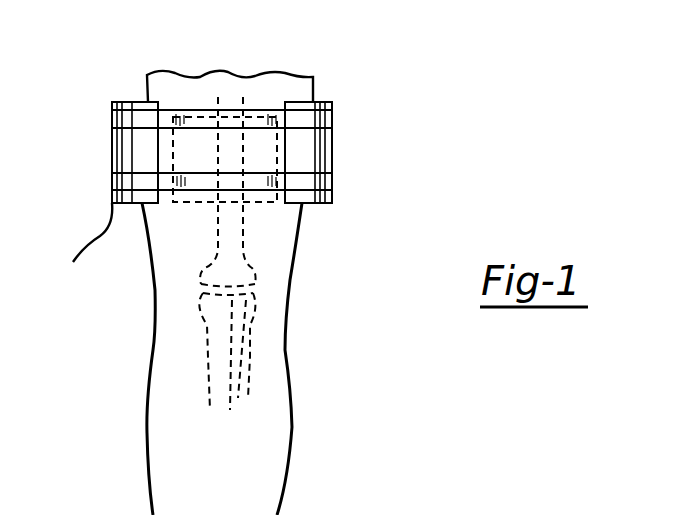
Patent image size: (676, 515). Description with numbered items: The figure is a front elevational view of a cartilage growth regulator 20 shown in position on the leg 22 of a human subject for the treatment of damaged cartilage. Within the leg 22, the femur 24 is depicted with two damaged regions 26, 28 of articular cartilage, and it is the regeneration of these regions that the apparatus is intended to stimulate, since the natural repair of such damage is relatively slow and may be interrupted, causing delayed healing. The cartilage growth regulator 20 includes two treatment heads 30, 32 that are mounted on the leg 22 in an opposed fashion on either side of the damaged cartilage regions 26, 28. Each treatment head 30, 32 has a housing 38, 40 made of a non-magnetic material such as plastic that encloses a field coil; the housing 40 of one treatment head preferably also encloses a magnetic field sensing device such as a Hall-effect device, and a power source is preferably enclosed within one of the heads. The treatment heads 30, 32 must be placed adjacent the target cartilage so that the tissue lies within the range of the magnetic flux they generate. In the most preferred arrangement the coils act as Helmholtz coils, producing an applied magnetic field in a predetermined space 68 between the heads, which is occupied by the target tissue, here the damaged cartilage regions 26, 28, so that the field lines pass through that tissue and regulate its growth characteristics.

The cartilage growth regulator 20 is at (344, 120).
The leg 22 is at (290, 467).
The femur 24 is at (249, 266).
The damaged region 26 is at (255, 285).
The damaged region 28 is at (201, 284).
The treatment head 30 is at (108, 142).
The treatment head 32 is at (336, 167).
The housing 38 is at (81, 250).
The housing 40 is at (334, 150).
The predetermined space 68 is at (202, 155).